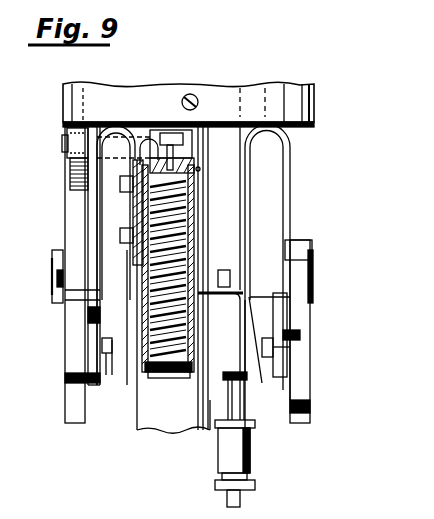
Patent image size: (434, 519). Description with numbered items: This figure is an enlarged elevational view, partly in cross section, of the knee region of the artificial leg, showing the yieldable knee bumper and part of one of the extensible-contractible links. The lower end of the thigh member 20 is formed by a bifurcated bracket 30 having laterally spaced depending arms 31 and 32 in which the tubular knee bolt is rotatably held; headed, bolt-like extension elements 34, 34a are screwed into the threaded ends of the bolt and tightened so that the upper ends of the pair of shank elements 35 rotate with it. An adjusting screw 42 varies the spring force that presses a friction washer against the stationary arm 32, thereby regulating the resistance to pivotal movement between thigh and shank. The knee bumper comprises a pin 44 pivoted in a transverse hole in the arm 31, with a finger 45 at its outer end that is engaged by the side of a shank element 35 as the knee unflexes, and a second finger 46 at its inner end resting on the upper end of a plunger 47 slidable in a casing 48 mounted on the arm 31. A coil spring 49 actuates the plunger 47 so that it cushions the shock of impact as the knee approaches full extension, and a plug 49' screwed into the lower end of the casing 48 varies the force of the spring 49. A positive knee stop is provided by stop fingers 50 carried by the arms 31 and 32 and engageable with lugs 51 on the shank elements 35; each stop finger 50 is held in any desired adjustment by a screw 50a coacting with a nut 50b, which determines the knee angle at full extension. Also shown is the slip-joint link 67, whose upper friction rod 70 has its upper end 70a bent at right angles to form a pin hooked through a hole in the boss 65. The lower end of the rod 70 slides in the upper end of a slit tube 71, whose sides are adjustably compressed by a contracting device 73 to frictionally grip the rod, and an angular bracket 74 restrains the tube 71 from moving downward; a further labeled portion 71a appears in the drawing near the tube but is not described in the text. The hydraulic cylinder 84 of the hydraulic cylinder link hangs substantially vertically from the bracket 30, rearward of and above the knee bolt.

The thigh member 20 is at (80, 97).
The bifurcated bracket 30 is at (298, 140).
The depending arm 31 is at (113, 205).
The depending arm 32 is at (272, 180).
The extension element 34 is at (63, 260).
The extension element 34a is at (315, 280).
The shank element 35 is at (72, 330).
The adjusting screw 42 is at (53, 256).
The pin 44 is at (62, 143).
The finger 45 is at (70, 172).
The second finger 46 is at (160, 145).
The plunger 47 is at (199, 168).
The casing 48 is at (196, 178).
The coil spring 49 is at (186, 268).
The plug 49' is at (168, 388).
The stop finger 50 is at (97, 378).
The screw 50a is at (112, 352).
The nut 50b is at (112, 342).
The lug 51 is at (99, 402).
The boss 65 is at (250, 233).
The link 67 is at (262, 472).
The upper friction rod 70 is at (240, 345).
The upper end of rod 70a is at (265, 349).
The tube 71 is at (242, 503).
The body corner 71a is at (213, 432).
The contracting device 73 is at (238, 452).
The angular bracket 74 is at (246, 400).
The cylinder 84 is at (150, 433).